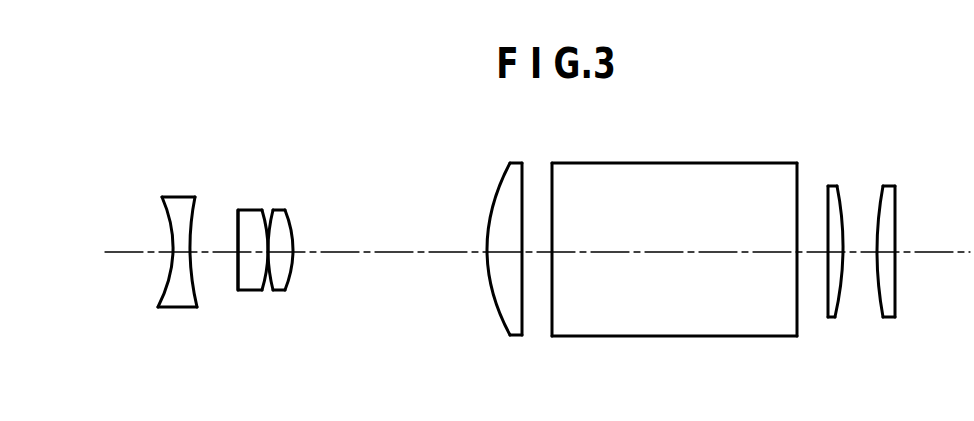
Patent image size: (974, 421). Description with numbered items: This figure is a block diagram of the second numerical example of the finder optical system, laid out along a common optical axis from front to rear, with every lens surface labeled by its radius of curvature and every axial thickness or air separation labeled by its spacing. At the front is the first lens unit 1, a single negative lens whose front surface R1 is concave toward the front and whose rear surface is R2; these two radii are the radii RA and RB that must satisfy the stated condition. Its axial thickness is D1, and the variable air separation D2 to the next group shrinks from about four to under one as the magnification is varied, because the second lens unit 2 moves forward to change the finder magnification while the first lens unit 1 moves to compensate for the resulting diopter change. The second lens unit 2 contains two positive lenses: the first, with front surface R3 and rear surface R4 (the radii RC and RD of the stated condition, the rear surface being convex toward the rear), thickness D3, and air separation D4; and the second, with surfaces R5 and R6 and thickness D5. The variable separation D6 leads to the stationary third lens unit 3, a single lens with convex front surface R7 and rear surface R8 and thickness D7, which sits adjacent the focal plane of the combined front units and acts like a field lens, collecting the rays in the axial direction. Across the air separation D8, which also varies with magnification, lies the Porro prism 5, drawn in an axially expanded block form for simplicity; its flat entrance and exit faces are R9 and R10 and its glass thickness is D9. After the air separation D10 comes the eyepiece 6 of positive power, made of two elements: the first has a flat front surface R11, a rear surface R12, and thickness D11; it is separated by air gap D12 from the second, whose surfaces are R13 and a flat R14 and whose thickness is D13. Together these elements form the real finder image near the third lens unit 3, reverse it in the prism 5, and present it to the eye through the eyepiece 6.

The first lens unit 1 is at (170, 197).
The second lens unit 2 is at (272, 189).
The third lens unit 3 is at (496, 210).
The Porro prism 5 is at (674, 210).
The eyepiece 6 is at (872, 202).
The first surface radius of curvature R1 is at (166, 205).
The second surface radius of curvature R2 is at (187, 219).
The third surface radius of curvature R3 is at (237, 220).
The fourth surface radius of curvature R4 is at (266, 208).
The fifth surface radius of curvature R5 is at (276, 208).
The sixth surface radius of curvature R6 is at (312, 211).
The seventh surface radius of curvature R7 is at (490, 200).
The eighth surface radius of curvature R8 is at (524, 233).
The ninth surface radius of curvature R9 is at (550, 180).
The tenth surface radius of curvature R10 is at (792, 234).
The eleventh surface radius of curvature R11 is at (826, 197).
The twelfth surface radius of curvature R12 is at (845, 205).
The thirteenth surface radius of curvature R13 is at (880, 207).
The fourteenth surface radius of curvature R14 is at (912, 224).
The first axial thickness D1 is at (183, 252).
The second air separation D2 is at (210, 252).
The third axial thickness D3 is at (253, 252).
The fourth air separation D4 is at (268, 252).
The fifth axial thickness D5 is at (282, 252).
The sixth air separation D6 is at (380, 252).
The seventh axial thickness D7 is at (508, 252).
The eighth air separation D8 is at (540, 252).
The ninth axial thickness D9 is at (672, 252).
The tenth air separation D10 is at (810, 252).
The eleventh axial thickness D11 is at (835, 252).
The twelfth air separation D12 is at (860, 252).
The thirteenth axial thickness D13 is at (888, 252).